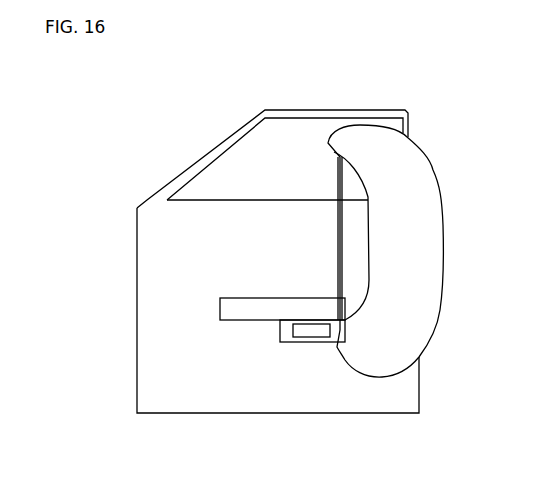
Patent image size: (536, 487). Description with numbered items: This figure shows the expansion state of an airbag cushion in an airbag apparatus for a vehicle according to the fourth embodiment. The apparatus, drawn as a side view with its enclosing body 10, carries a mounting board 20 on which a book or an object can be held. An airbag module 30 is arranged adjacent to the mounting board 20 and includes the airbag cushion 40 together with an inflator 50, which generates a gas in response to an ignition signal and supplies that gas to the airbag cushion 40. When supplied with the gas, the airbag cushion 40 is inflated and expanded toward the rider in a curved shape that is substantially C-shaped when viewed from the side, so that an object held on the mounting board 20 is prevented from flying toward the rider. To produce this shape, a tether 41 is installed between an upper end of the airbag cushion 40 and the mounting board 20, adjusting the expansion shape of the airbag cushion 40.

The housing body 10 is at (137, 290).
The mounting board 20 is at (220, 306).
The airbag module 30 is at (272, 337).
The airbag cushion 40 is at (375, 122).
The tether 41 is at (340, 228).
The inflator 50 is at (308, 332).